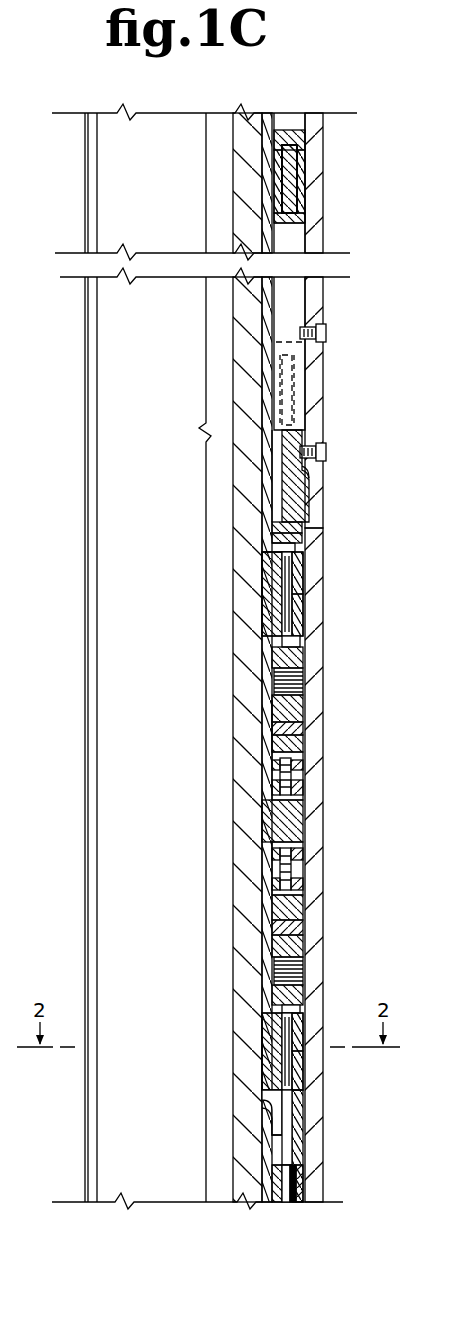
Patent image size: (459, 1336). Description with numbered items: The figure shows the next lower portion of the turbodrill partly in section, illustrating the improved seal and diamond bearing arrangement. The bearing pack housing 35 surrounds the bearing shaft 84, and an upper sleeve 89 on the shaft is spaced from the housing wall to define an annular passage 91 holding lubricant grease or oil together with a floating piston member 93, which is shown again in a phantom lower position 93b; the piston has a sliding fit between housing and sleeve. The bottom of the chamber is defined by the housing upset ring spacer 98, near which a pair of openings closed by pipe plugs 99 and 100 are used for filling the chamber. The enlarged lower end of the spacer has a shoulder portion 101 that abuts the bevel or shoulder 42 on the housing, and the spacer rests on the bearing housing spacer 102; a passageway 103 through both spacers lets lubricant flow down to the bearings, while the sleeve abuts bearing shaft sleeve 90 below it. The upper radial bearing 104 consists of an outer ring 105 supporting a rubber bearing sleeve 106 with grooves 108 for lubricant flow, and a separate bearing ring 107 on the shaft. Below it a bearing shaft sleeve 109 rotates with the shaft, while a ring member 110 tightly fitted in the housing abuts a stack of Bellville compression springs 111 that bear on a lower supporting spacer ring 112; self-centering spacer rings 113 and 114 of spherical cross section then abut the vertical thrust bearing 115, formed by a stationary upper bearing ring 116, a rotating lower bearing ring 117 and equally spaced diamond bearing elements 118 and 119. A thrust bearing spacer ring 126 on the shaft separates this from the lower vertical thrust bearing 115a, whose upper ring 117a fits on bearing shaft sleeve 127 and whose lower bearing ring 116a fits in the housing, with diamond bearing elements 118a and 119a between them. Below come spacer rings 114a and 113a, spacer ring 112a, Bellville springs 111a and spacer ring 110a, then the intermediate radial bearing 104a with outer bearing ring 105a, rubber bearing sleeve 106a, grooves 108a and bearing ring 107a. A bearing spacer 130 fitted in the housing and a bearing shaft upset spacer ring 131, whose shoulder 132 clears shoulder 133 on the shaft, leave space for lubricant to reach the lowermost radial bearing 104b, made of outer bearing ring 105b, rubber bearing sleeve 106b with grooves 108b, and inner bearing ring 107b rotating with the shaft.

The bearing shaft 84 is at (243, 373).
The floating piston member 93 is at (285, 178).
The seal assembly (phantom position) 93b is at (300, 398).
The upper sleeve 89 is at (285, 240).
The annular passage 91 is at (290, 303).
The pipe plug 99 is at (326, 333).
The pipe plug 100 is at (326, 452).
The housing upset ring spacer 98 is at (283, 447).
The shoulder portion 101 is at (309, 468).
The bevel or shoulder 42 is at (315, 488).
The bearing pack housing 35 is at (323, 515).
The passageway 103 is at (275, 522).
The bearing shaft sleeve 90 is at (272, 533).
The bearing housing spacer 102 is at (300, 545).
The upper radial bearing 104 is at (272, 599).
The rubber bearing sleeve 106 is at (298, 578).
The bearing ring 107 is at (272, 590).
The grooves 108 is at (285, 627).
The outer ring 105 is at (298, 630).
The ring member 110 is at (303, 658).
The compression springs 111 is at (303, 683).
The lower supporting spacer ring 112 is at (303, 712).
The bearing shaft sleeve 109 is at (272, 703).
The spacer ring 113 is at (272, 728).
The spacer ring 114 is at (275, 742).
The vertical thrust bearing 115 is at (306, 778).
The diamond bearing element 119 is at (276, 762).
The diamond bearing element 118 is at (276, 784).
The upper annular bearing plate or ring 116 is at (300, 762).
The lower bearing ring 117 is at (300, 788).
The thrust bearing spacer ring 126 is at (303, 825).
The lower vertical thrust bearing 115a is at (306, 880).
The diamond bearing element 119a is at (276, 855).
The diamond bearing element 118a is at (276, 883).
The upper ring 117a is at (300, 855).
The lower bearing ring 116a is at (300, 885).
The spacer ring 114a is at (275, 905).
The spacer ring 113a is at (275, 925).
The spacer ring 112a is at (275, 947).
The compression springs 111a is at (303, 970).
The spacer ring 110a is at (303, 995).
The bearing shaft sleeve 127 is at (282, 1008).
The intermediate radial bearing 104a is at (277, 1055).
The bearing ring 107a is at (272, 1055).
The grooves 108a is at (285, 1080).
The rubber bearing sleeve 106a is at (292, 1025).
The outer bearing ring 105a is at (300, 1080).
The bearing shaft upset spacer ring 131 is at (268, 1110).
The shoulder 132 is at (268, 1120).
The shoulder 133 is at (276, 1126).
The bearing spacer 130 is at (303, 1150).
The bearing ring 107b is at (274, 1180).
The grooves 108b is at (286, 1203).
The rubber bearing sleeve 106b is at (293, 1203).
The outer bearing ring 105b is at (300, 1180).
The lowermost radial bearing 104b is at (303, 1203).